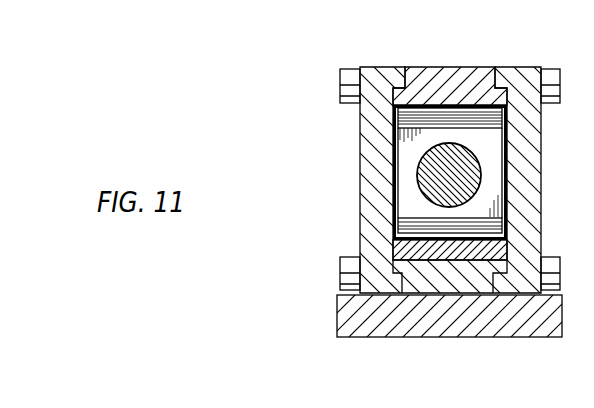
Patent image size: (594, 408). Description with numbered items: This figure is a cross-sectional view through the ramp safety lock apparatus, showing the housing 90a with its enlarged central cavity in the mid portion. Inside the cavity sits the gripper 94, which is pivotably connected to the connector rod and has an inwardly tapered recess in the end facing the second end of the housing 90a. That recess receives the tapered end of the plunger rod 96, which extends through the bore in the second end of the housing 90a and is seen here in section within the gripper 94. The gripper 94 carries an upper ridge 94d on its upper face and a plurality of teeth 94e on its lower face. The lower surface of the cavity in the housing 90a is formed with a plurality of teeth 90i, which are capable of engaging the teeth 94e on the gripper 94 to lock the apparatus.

The housing 90a is at (438, 61).
The teeth 90i is at (402, 253).
The gripper 94 is at (397, 147).
The upper ridge 94d is at (397, 108).
The teeth 94e is at (400, 230).
The plunger rod 96 is at (433, 183).